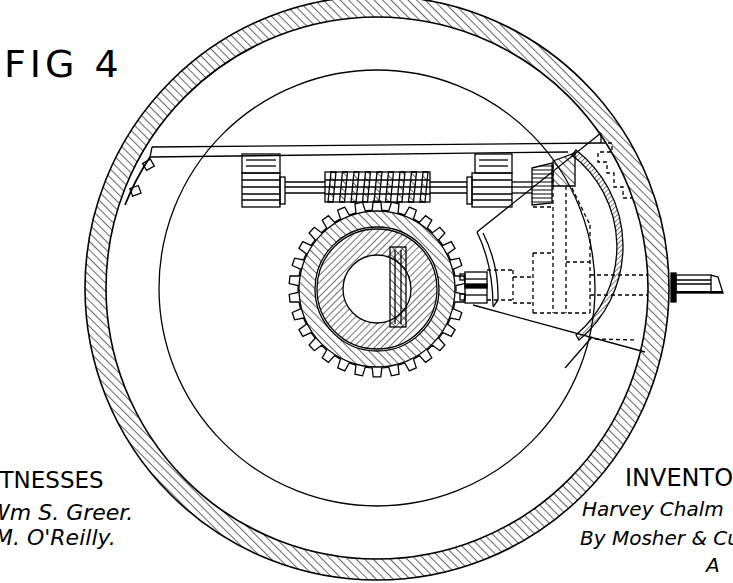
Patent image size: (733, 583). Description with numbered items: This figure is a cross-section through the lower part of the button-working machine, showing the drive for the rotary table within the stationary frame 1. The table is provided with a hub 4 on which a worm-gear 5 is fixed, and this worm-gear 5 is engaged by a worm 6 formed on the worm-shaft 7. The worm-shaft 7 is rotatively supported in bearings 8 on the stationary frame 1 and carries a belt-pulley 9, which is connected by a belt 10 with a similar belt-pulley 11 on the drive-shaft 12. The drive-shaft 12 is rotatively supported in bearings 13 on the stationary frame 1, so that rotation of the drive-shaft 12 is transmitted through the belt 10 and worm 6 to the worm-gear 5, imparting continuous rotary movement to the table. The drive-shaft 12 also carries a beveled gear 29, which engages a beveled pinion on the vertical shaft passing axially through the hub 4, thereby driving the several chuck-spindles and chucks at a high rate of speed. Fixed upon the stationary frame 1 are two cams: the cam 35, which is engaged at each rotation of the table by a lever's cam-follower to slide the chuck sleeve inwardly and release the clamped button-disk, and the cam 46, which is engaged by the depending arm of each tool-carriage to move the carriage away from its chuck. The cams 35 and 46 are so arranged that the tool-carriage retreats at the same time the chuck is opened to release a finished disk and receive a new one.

The stationary frame 1 is at (586, 89).
The hub 4 is at (290, 300).
The worm-gear 5 is at (296, 281).
The worm 6 is at (389, 172).
The worm-shaft 7 is at (449, 184).
The bearings 8 is at (259, 201).
The belt-pulley 9 is at (548, 166).
The belt 10 is at (560, 162).
The belt-pulley 11 is at (543, 312).
The drive-shaft 12 is at (697, 275).
The bearings 13 is at (477, 310).
The beveled gear 29 is at (390, 280).
The cam 35 is at (490, 245).
The cam 46 is at (619, 259).